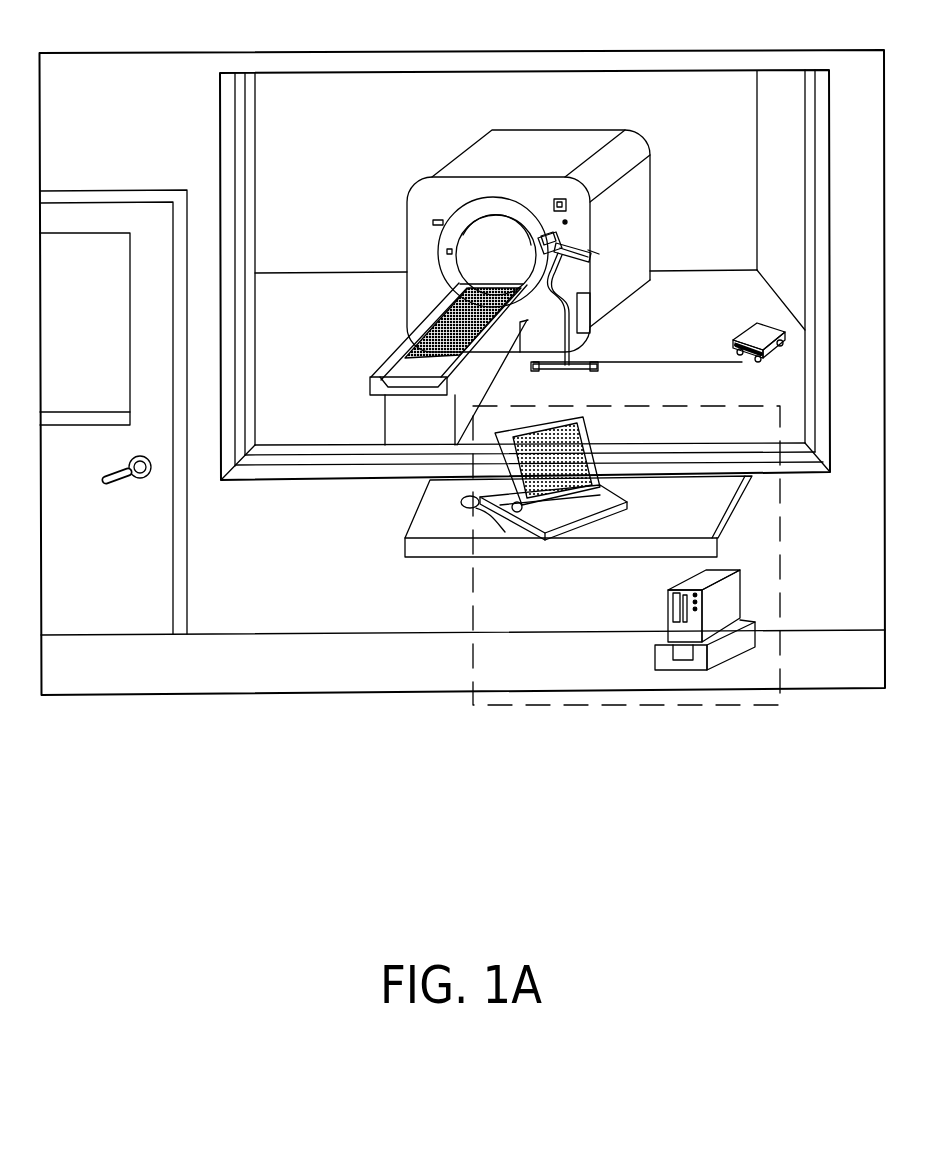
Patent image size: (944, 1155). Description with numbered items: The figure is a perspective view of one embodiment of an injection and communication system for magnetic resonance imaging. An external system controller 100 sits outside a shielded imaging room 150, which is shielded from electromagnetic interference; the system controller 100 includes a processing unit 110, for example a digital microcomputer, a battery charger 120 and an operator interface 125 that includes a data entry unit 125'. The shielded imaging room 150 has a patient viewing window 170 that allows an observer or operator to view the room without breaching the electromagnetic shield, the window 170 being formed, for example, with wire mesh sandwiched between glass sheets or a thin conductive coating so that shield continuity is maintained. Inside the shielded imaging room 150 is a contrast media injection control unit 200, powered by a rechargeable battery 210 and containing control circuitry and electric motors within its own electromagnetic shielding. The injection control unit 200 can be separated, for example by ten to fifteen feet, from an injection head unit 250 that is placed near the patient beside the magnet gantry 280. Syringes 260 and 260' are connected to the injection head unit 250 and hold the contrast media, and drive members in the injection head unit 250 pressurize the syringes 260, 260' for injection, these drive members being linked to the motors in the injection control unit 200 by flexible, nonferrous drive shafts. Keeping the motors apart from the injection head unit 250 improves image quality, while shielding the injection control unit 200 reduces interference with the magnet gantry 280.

The external system controller 100 is at (335, 576).
The processing unit 110 is at (650, 610).
The battery charger 120 is at (668, 591).
The operator interface 125 is at (412, 513).
The data entry unit 125' is at (578, 487).
The imaging room 150 is at (132, 67).
The patient viewing window 170 is at (283, 103).
The contrast media injection control unit 200 is at (752, 327).
The rechargeable battery 210 is at (735, 343).
The injection head unit 250 is at (580, 236).
The syringe 260 is at (631, 201).
The syringe 260' is at (529, 165).
The magnet gantry 280 is at (481, 157).